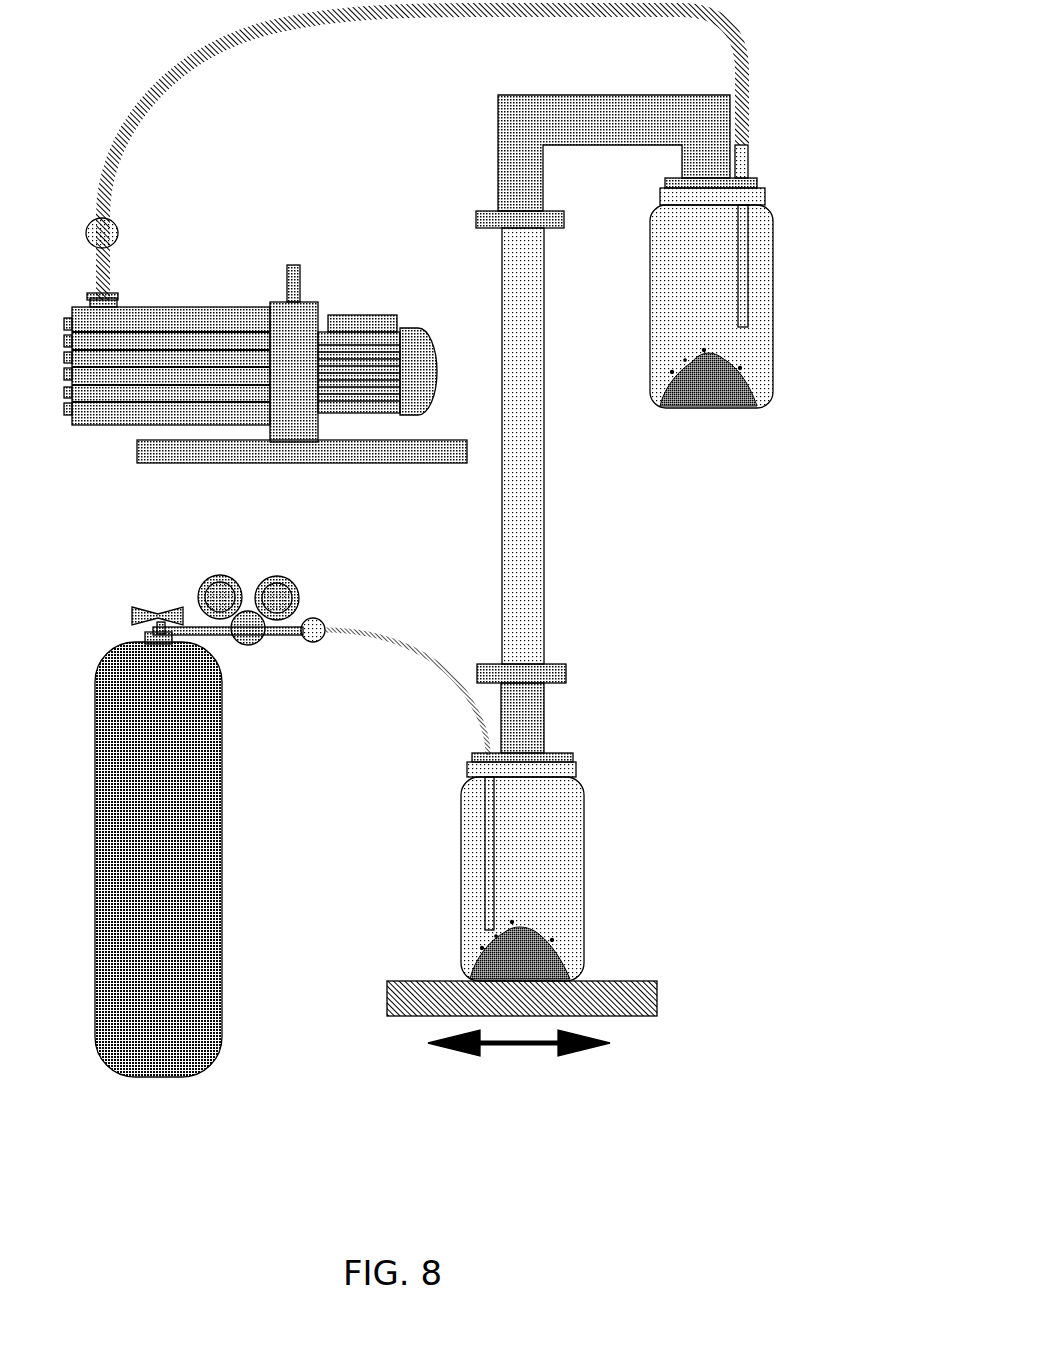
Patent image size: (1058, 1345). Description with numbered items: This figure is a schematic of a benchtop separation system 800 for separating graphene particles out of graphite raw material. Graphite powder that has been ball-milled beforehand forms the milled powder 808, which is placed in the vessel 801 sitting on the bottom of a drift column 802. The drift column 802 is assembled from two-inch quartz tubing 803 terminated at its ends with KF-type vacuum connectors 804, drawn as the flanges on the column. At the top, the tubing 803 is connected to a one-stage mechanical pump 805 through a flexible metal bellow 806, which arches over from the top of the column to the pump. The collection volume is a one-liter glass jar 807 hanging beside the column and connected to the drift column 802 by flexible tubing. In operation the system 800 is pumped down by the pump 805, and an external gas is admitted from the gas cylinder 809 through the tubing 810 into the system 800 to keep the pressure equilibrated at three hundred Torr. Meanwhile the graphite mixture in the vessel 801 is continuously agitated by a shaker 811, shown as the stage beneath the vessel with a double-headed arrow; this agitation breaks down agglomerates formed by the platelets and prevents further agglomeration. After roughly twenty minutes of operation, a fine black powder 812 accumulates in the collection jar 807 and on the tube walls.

The benchtop separation system 800 is at (796, 661).
The vessel 801 is at (640, 878).
The drift column 802 is at (614, 424).
The quartz tubing 803 is at (575, 450).
The KF-50 connectors 804 is at (455, 218).
The one-stage mechanical pump 805 is at (240, 480).
The flexible metal bellow 806 is at (395, 50).
The glass jar 807 is at (800, 310).
The milled powder 808 is at (600, 950).
The gas cylinder 809 is at (245, 857).
The tubing 810 is at (410, 680).
The shaker 811 is at (685, 1015).
The fine black powder 812 is at (755, 420).